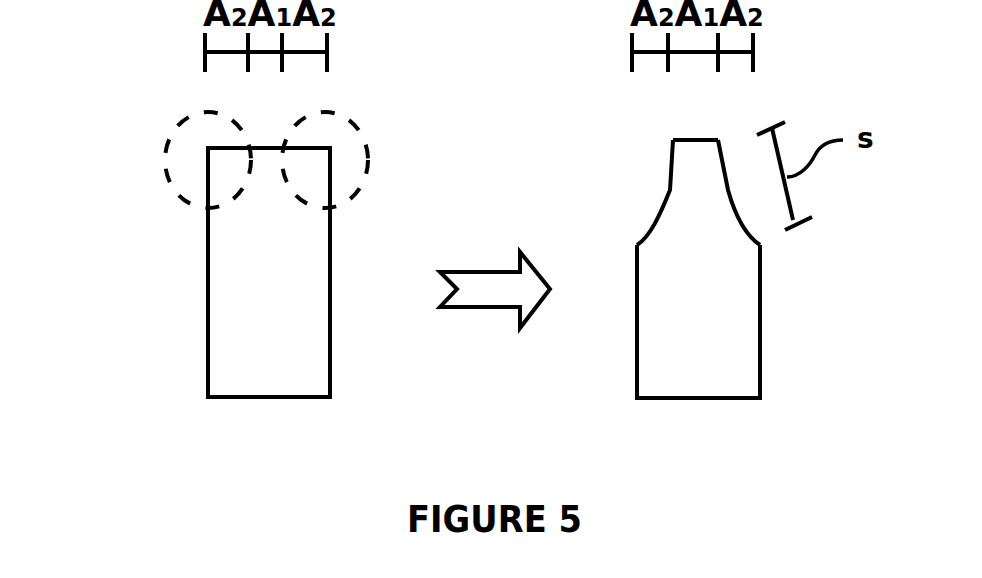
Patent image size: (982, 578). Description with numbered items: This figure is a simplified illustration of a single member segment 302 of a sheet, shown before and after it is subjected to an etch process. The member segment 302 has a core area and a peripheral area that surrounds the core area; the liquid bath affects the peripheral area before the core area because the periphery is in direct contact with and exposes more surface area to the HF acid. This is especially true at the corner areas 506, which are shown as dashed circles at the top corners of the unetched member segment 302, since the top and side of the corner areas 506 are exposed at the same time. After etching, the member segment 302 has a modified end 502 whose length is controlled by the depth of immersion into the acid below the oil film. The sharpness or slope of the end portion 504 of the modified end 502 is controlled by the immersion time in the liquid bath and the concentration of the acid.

The member segment 302 is at (483, 230).
The modified end 502 is at (732, 127).
The end portion 504 is at (688, 138).
The corner areas 506 is at (165, 166).